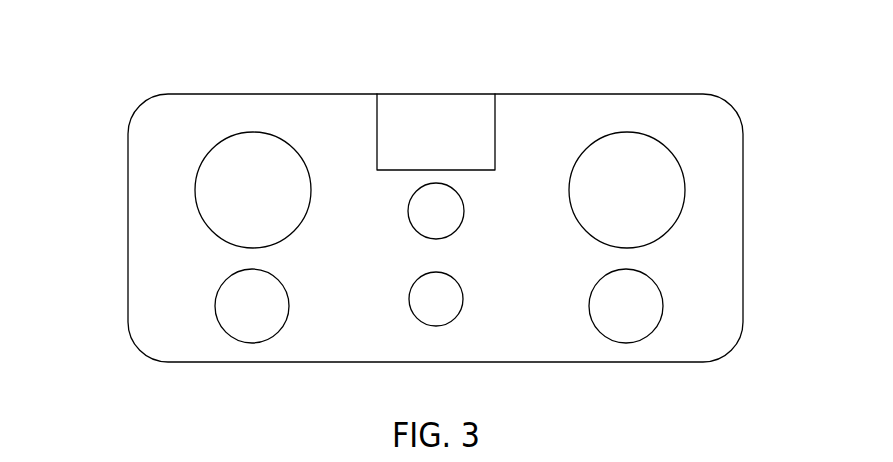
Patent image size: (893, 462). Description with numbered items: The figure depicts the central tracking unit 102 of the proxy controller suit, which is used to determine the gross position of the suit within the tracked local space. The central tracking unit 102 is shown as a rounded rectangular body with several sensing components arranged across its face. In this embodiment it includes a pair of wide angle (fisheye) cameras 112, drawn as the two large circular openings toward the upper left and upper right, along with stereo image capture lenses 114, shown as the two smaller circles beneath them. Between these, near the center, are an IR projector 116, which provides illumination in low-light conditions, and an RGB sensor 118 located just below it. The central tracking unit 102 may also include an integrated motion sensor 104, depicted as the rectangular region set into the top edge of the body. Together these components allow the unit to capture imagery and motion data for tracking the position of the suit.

The central tracking unit 102 is at (154, 123).
The integrated motion sensor 104 is at (466, 132).
The wide angle (fisheye) cameras 112 is at (218, 208).
The stereo image capture lenses 114 is at (226, 302).
The IR projector 116 is at (447, 213).
The RGB sensor 118 is at (437, 296).